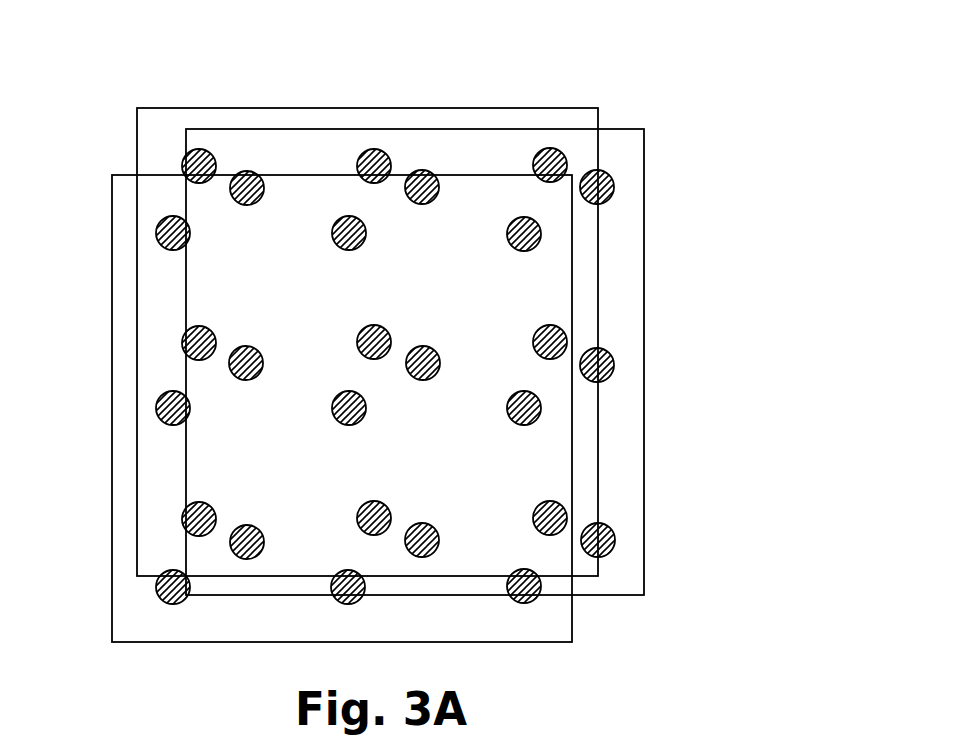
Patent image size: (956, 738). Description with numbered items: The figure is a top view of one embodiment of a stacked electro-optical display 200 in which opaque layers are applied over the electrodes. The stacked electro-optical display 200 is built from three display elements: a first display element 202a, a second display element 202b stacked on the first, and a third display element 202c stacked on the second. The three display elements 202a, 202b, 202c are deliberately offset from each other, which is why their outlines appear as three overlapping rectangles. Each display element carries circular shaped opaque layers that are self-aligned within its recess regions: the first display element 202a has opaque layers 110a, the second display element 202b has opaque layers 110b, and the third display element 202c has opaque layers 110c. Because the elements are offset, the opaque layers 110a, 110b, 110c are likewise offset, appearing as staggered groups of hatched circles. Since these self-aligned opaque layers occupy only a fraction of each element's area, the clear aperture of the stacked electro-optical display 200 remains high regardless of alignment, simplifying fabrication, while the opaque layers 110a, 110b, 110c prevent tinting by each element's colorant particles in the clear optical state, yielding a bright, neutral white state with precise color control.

The stacked electro-optical display 200 is at (584, 56).
The first display element 202a is at (135, 137).
The second display element 202b is at (648, 273).
The third display element 202c is at (110, 597).
The opaque layers 110a is at (210, 156).
The opaque layers 110b is at (248, 197).
The opaque layers 110c is at (180, 241).